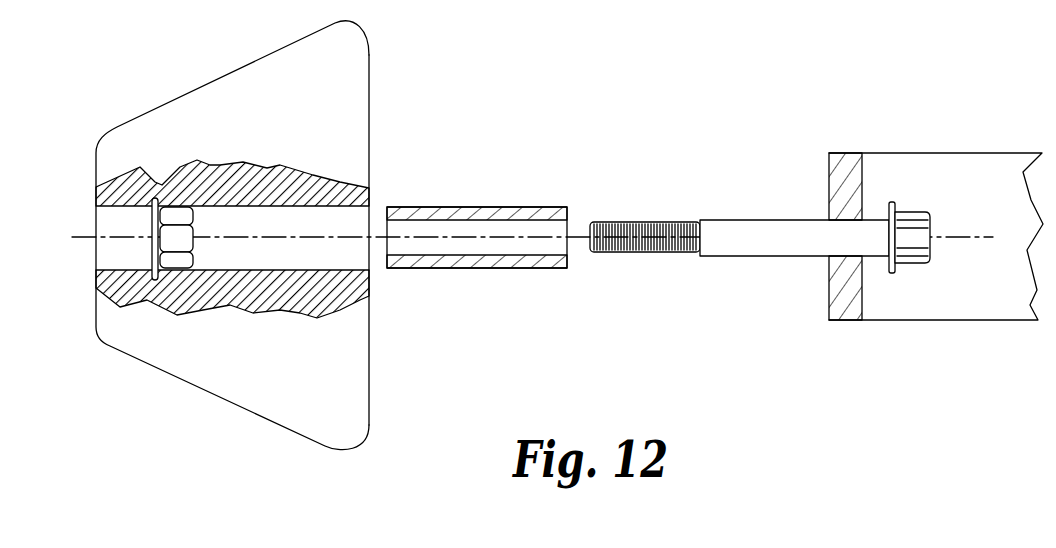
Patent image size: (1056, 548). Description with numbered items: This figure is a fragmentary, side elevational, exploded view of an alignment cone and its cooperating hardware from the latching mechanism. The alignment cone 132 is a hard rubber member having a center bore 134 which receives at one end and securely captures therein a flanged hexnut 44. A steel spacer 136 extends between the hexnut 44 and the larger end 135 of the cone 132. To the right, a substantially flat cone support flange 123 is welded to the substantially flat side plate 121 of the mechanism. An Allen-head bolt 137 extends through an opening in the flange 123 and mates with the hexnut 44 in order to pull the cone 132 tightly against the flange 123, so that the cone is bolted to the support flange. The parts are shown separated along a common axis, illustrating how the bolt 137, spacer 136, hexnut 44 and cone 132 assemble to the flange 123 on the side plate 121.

The flanged hexnut 44 is at (170, 210).
The side plate 121 is at (902, 170).
The cone support flange 123 is at (843, 285).
The alignment cone 132 is at (247, 380).
The center bore 134 is at (321, 211).
The larger end 135 is at (369, 353).
The steel spacer 136 is at (482, 203).
The Allen-head bolt 137 is at (755, 216).